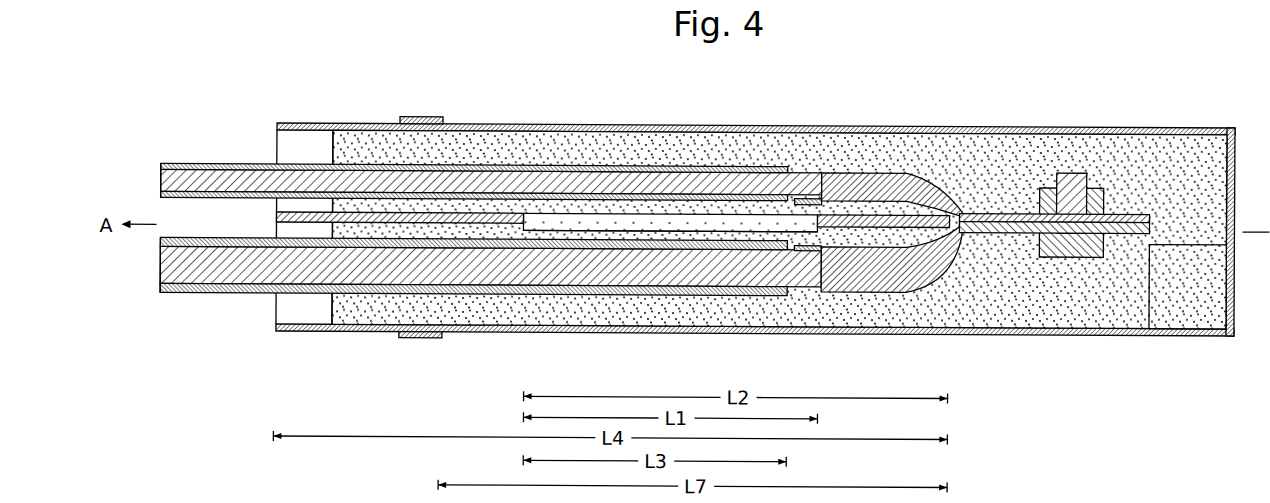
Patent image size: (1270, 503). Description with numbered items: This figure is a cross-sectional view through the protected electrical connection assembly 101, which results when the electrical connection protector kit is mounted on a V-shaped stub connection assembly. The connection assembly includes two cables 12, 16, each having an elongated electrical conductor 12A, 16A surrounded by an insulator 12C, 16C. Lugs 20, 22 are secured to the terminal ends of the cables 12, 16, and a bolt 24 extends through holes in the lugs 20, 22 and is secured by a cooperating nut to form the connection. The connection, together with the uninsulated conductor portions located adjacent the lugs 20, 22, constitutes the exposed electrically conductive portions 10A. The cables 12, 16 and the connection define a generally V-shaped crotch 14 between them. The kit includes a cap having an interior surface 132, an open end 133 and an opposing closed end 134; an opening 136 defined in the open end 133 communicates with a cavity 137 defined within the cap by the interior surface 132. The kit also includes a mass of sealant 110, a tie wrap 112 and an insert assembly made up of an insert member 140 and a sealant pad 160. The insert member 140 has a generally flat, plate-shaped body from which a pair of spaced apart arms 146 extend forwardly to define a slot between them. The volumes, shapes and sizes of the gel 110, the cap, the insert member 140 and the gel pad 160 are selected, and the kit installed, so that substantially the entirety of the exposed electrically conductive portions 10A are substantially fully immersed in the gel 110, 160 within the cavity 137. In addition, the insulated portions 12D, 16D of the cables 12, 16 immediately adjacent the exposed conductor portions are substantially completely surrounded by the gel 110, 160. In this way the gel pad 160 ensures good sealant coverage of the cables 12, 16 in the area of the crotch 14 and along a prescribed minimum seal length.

The protected electrical connection assembly 101 is at (923, 46).
The exposed electrically conductive portions 10A is at (846, 150).
The cable 12 is at (470, 137).
The electrical conductor 12A is at (180, 165).
The insulator 12C is at (228, 164).
The insulated portion 12D is at (545, 195).
The V-shaped crotch 14 is at (704, 232).
The cable 16 is at (469, 316).
The electrical conductor 16A is at (180, 277).
The insulator 16C is at (207, 293).
The insulated portion 16D is at (507, 247).
The lug 20 is at (860, 182).
The lug 22 is at (880, 289).
The bolt 24 is at (1074, 184).
The mass of sealant 110 is at (1172, 158).
The tie wrap 112 is at (430, 116).
The interior surface 132 is at (1075, 326).
The open end 133 is at (273, 331).
The closed end 134 is at (1236, 145).
The opening 136 is at (273, 312).
The cavity 137 is at (1152, 299).
The insert member 140 is at (317, 222).
The arms 146 is at (877, 224).
The sealant pad 160 is at (631, 213).